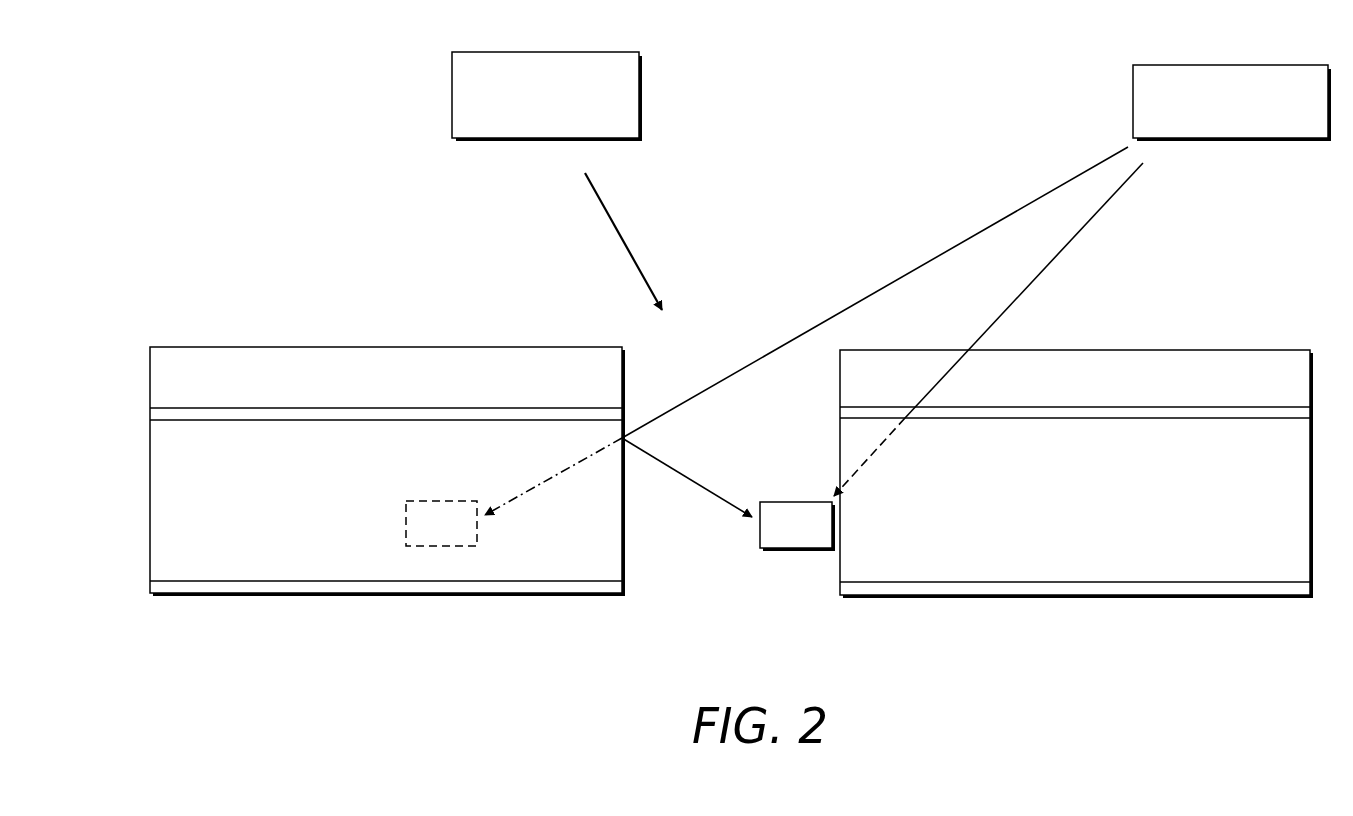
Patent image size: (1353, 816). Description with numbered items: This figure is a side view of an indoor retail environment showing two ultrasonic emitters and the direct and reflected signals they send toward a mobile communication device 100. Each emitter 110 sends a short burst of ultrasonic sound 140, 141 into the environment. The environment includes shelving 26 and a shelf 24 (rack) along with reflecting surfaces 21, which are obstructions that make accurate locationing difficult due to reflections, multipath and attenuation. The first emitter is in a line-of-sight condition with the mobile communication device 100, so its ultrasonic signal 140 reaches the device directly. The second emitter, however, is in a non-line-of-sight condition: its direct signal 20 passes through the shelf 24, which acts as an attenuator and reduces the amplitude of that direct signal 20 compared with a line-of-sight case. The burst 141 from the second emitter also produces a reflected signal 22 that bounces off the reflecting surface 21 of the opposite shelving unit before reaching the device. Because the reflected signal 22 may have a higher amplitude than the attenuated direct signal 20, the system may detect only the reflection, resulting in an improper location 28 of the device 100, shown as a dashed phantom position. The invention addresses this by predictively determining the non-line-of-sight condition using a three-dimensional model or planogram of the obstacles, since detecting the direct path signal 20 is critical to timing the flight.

The emitter 110 is at (546, 52).
The ultrasonic signal 140 is at (630, 250).
The ultrasonic sound burst 141 is at (1041, 165).
The reflecting surface 21 is at (623, 548).
The shelving 26 is at (1233, 350).
The shelf 24 is at (947, 412).
The reflected signal 22 is at (942, 257).
The direct signal 20 is at (1068, 245).
The improper location 28 is at (441, 500).
The mobile communication device 100 is at (795, 502).